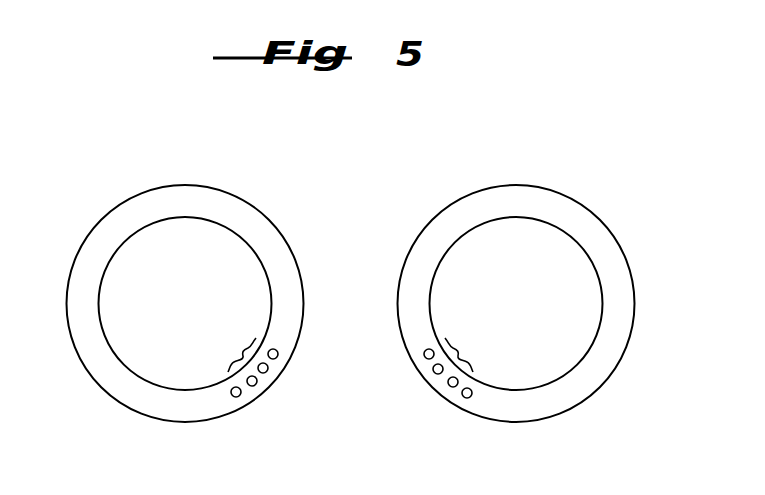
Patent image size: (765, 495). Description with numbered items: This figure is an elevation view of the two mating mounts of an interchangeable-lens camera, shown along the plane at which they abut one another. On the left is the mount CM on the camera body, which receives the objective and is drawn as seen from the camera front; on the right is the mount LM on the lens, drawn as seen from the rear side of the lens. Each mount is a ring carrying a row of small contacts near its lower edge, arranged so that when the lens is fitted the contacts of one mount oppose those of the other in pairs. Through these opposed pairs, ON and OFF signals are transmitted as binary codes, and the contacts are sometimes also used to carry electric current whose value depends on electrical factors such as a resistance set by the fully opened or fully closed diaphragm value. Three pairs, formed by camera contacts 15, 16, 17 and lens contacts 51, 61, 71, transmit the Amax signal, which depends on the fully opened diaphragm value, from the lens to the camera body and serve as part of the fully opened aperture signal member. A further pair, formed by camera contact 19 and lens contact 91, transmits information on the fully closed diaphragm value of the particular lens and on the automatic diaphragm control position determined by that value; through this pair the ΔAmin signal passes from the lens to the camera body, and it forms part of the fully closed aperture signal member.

The mount on the camera CM is at (109, 381).
The contact 15 is at (278, 354).
The contact 16 is at (268, 371).
The contact 17 is at (254, 386).
The contact 19 is at (237, 397).
The mount on the lens LM is at (588, 391).
The contact 51 is at (424, 357).
The contact 61 is at (435, 374).
The contact 71 is at (451, 387).
The contact 91 is at (466, 398).